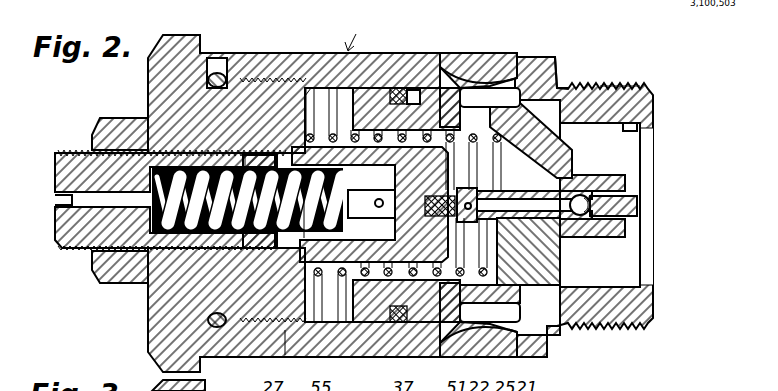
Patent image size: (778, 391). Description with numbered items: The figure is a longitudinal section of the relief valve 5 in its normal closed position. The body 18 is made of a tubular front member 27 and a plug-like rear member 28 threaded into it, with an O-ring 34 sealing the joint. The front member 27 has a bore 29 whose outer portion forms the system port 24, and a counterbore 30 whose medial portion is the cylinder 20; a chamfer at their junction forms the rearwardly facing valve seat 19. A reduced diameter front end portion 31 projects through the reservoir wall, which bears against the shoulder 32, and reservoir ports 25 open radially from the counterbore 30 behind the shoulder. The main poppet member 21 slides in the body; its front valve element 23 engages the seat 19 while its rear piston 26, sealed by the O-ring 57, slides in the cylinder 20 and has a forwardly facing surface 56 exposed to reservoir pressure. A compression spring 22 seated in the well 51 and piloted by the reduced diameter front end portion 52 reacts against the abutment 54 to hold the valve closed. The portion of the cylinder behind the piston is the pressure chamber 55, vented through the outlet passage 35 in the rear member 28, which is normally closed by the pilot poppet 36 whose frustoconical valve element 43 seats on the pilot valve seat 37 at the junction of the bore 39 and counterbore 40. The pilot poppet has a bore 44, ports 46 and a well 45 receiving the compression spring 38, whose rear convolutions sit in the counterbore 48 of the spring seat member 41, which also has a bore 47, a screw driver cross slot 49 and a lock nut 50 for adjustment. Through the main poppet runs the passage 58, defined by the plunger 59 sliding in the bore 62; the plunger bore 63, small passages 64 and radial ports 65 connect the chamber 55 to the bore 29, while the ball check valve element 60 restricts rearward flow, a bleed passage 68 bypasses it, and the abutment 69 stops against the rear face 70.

The relief valve assembly 5 is at (120, 97).
The body 18 is at (358, 27).
The annular valve seat 19 is at (540, 112).
The cylinder 20 is at (397, 90).
The main poppet member 21 is at (490, 120).
The compression spring 22 is at (438, 128).
The valve element 23 is at (556, 85).
The system port 24 is at (642, 270).
The reservoir ports 25 is at (495, 66).
The piston 26 is at (462, 134).
The front member 27 is at (386, 96).
The rear member 28 is at (258, 78).
The bore 29 is at (640, 129).
The counterbore 30 is at (312, 88).
The reduced diameter front end portion 31 is at (602, 84).
The shoulder 32 is at (562, 92).
The O-ring 34 is at (216, 72).
The outlet passage 35 is at (258, 150).
The pilot poppet 36 is at (352, 357).
The pilot valve seat 37 is at (380, 300).
The compression spring 38 is at (246, 345).
The bore 39 is at (408, 265).
The counterbore 40 is at (274, 340).
The spring seat member 41 is at (182, 262).
The frustoconical valve element 43 is at (447, 270).
The bore 44 is at (372, 214).
The well 45 is at (302, 335).
The ports 46 is at (384, 186).
The bore 47 is at (110, 226).
The counterbore 48 is at (95, 256).
The screw driver cross slot 49 is at (56, 199).
The lock nut 50 is at (95, 133).
The well 51 is at (480, 100).
The reduced diameter front end portion 52 is at (506, 70).
The abutment 54 is at (318, 92).
The pressure chamber 55 is at (340, 130).
The forwardly facing surface 56 is at (470, 334).
The O-ring 57 is at (426, 88).
The passage 58 is at (596, 222).
The plunger 59 is at (505, 196).
The ball check valve element 60 is at (604, 203).
The bore 62 is at (570, 237).
The bore 63 is at (592, 192).
The passages 64 is at (640, 174).
The radial ports 65 is at (488, 304).
The bleed passage 68 is at (586, 176).
The abutment 69 is at (530, 166).
The rear face 70 is at (561, 262).